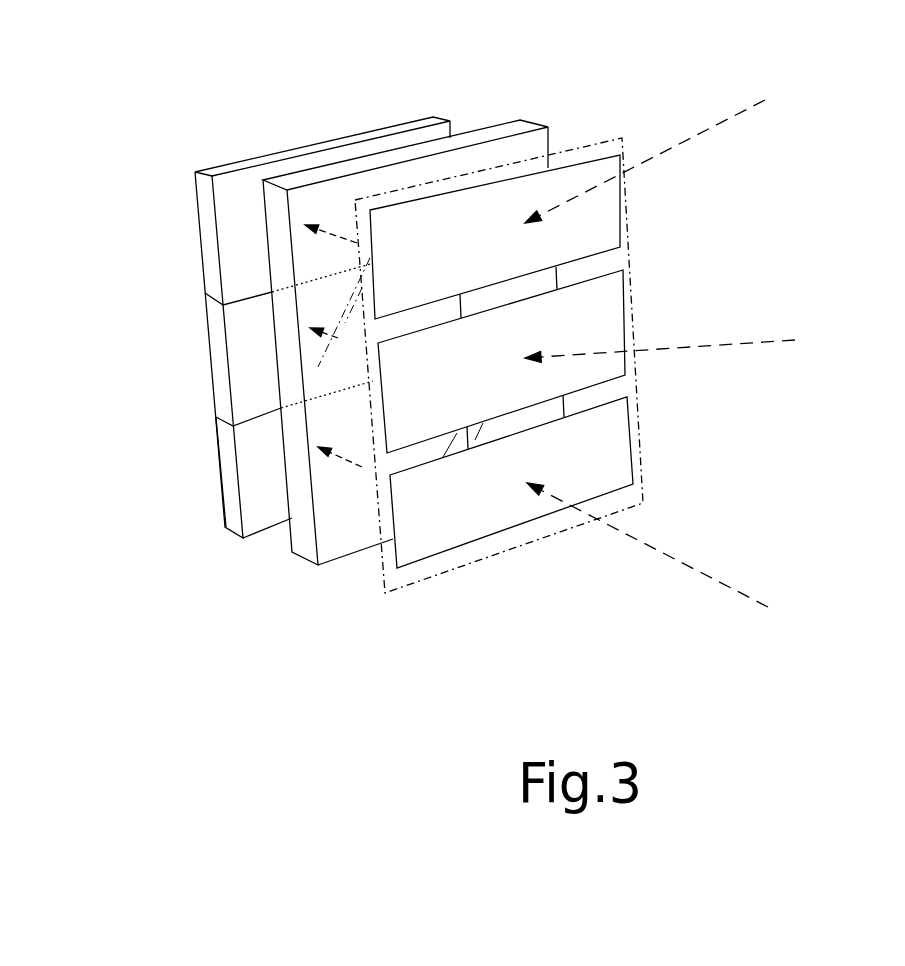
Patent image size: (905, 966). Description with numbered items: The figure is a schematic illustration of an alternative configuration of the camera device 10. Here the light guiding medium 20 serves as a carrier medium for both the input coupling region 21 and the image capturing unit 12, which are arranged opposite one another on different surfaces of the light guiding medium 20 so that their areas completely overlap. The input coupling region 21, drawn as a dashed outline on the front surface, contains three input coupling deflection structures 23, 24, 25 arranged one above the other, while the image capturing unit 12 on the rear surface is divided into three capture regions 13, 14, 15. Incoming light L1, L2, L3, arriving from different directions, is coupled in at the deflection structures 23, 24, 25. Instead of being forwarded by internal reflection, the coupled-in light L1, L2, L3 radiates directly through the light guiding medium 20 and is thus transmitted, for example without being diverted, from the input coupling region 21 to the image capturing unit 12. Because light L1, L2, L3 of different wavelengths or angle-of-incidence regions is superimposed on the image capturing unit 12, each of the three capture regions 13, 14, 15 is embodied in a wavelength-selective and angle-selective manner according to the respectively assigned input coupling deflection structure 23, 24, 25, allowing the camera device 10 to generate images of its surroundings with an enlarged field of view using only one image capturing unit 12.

The camera device 10 is at (294, 99).
The image capturing unit 12 is at (195, 182).
The capture region 13 is at (207, 243).
The capture region 14 is at (217, 362).
The capture region 15 is at (227, 478).
The light guiding medium 20 is at (292, 547).
The input coupling region 21 is at (645, 472).
The input coupling deflection structure 23 is at (570, 183).
The input coupling deflection structure 24 is at (597, 308).
The input coupling deflection structure 25 is at (488, 517).
The light L1 is at (737, 113).
The light L2 is at (770, 343).
The light L3 is at (707, 576).